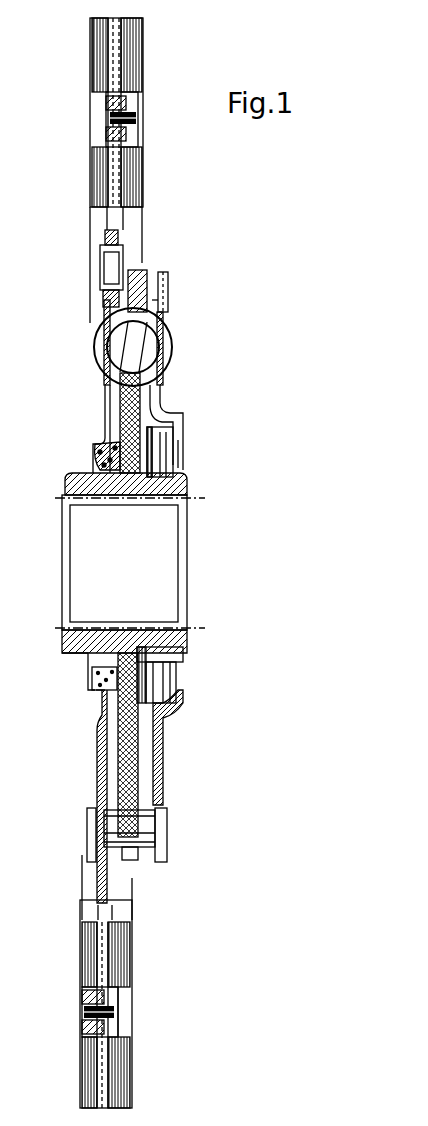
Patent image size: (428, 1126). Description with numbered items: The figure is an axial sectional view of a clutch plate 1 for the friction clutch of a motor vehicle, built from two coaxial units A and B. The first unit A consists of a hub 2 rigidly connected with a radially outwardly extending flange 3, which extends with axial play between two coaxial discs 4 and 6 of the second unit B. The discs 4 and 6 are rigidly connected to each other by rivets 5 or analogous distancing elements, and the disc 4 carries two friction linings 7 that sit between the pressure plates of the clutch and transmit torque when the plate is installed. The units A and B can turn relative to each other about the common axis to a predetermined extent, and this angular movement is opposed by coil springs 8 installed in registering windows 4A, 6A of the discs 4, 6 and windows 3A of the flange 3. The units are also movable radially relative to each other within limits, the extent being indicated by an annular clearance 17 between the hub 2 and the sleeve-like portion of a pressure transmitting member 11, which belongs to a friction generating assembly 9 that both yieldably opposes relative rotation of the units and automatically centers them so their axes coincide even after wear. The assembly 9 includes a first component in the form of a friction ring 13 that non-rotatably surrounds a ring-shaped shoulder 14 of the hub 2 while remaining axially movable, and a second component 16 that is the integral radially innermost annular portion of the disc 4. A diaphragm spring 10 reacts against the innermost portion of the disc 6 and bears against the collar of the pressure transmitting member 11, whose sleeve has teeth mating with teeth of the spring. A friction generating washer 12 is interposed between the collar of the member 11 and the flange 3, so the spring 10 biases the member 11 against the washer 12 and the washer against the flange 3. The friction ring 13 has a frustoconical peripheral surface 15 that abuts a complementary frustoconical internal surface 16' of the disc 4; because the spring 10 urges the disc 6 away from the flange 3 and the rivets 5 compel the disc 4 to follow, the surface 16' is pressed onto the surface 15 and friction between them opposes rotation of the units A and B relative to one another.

The clutch plate 1 is at (268, 305).
The hub 2 is at (75, 482).
The flange 3 is at (105, 403).
The windows 3A is at (165, 296).
The disc 4 is at (100, 284).
The windows 4A is at (103, 378).
The rivets 5 is at (167, 845).
The disc 6 is at (165, 773).
The windows 6A is at (165, 313).
The friction linings 7 is at (128, 49).
The coil springs 8 is at (98, 333).
The friction generating assembly 9 is at (183, 465).
The diaphragm spring 10 is at (178, 680).
The pressure transmitting member 11 is at (178, 447).
The friction generating washer 12 is at (185, 666).
The friction ring 13 is at (95, 688).
The ring-shaped shoulder 14 is at (103, 660).
The frustoconical peripheral surface 15 is at (97, 443).
The second component 16 is at (70, 450).
The frustoconical internal surface 16' is at (71, 725).
The annular clearance 17 is at (185, 630).
The first unit A is at (197, 553).
The second unit B is at (150, 175).